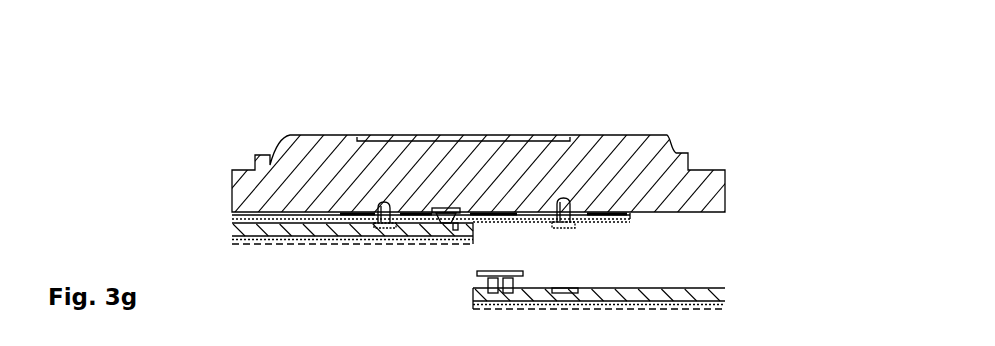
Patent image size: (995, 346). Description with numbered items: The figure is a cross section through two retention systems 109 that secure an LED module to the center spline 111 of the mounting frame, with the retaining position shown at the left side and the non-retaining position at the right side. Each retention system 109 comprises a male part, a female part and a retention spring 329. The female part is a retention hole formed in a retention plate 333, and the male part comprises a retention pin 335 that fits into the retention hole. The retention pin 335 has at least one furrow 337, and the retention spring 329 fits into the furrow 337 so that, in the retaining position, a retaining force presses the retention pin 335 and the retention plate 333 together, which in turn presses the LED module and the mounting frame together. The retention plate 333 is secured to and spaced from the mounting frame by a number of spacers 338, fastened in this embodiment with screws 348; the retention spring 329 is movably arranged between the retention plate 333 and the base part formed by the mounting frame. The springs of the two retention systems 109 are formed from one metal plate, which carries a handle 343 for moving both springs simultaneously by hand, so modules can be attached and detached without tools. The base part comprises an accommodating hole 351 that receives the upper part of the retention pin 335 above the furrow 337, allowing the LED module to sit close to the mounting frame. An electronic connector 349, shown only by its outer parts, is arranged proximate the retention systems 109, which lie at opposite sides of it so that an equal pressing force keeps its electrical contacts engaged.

The retention system 109 is at (187, 132).
The center spline 111 is at (616, 185).
The retention spring 329 is at (465, 209).
The retention plate 333 is at (530, 225).
The retention pin 335 is at (500, 272).
The furrow 337 is at (523, 281).
The spacer 338 is at (630, 218).
The handle 343 is at (232, 220).
The screw 348 is at (378, 211).
The electronic connector 349 is at (490, 280).
The accommodating hole 351 is at (450, 207).